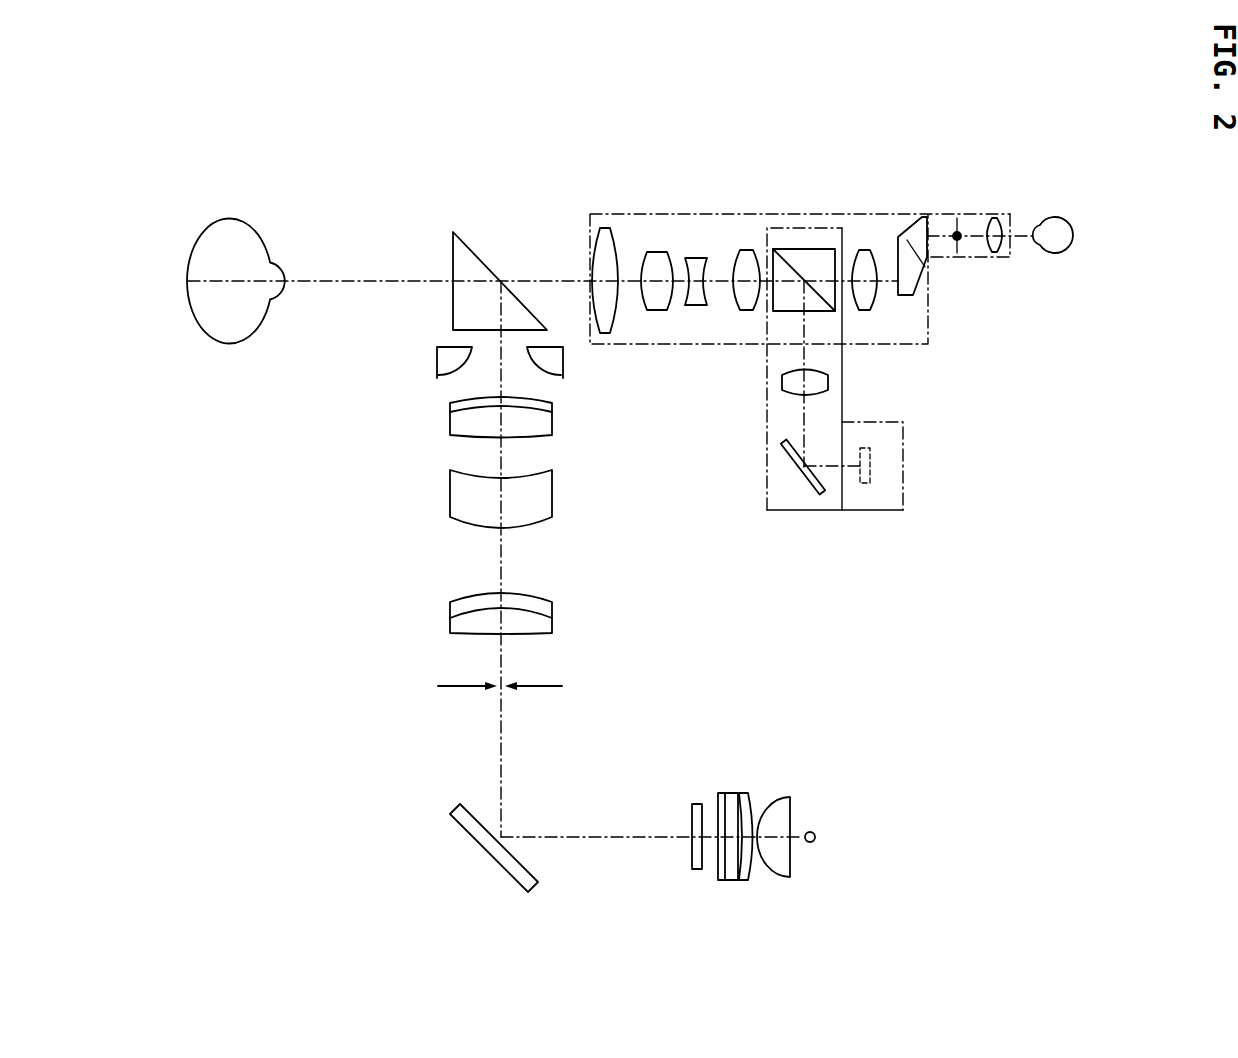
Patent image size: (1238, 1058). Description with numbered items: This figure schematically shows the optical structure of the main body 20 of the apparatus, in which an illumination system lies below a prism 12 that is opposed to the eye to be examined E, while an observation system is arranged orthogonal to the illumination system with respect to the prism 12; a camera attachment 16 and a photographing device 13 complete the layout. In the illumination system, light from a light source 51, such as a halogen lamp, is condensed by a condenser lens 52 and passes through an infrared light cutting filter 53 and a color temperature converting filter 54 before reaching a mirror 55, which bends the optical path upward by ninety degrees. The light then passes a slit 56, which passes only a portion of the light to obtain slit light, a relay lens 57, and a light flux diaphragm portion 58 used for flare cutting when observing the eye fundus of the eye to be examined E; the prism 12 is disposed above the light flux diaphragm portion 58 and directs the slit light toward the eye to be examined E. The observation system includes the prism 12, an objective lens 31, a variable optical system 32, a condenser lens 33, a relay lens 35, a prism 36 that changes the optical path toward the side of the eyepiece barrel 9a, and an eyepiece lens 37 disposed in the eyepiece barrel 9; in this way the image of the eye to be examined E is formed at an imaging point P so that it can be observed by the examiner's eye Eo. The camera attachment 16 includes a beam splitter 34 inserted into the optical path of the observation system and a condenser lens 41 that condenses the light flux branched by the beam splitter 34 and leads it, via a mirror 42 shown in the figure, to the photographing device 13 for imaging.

The eye to be examined E is at (258, 235).
The examiner's eye Eo is at (1048, 218).
The main body 20 is at (533, 212).
The prism 12 is at (465, 265).
The eyepiece barrel 9 is at (700, 214).
The eyepiece barrel 9a is at (980, 212).
The objective lens 31 is at (617, 317).
The variable optical system 32 is at (677, 252).
The condenser lens 33 is at (745, 315).
The beam splitter 34 is at (800, 252).
The relay lens 35 is at (868, 312).
The prism 36 is at (913, 297).
The eyepiece lens 37 is at (997, 254).
The imaging point P is at (962, 240).
The camera attachment 16 is at (767, 410).
The condenser lens 41 is at (828, 382).
The mirror 42 is at (812, 495).
The photographing device 13 is at (892, 512).
The light flux diaphragm portion 58 is at (565, 362).
The relay lens 57 is at (430, 398).
The slit 56 is at (458, 689).
The mirror 55 is at (462, 835).
The color temperature converting filter 54 is at (694, 805).
The infrared light cutting filter 53 is at (722, 793).
The condenser lens 52 is at (770, 800).
The light source 51 is at (815, 837).